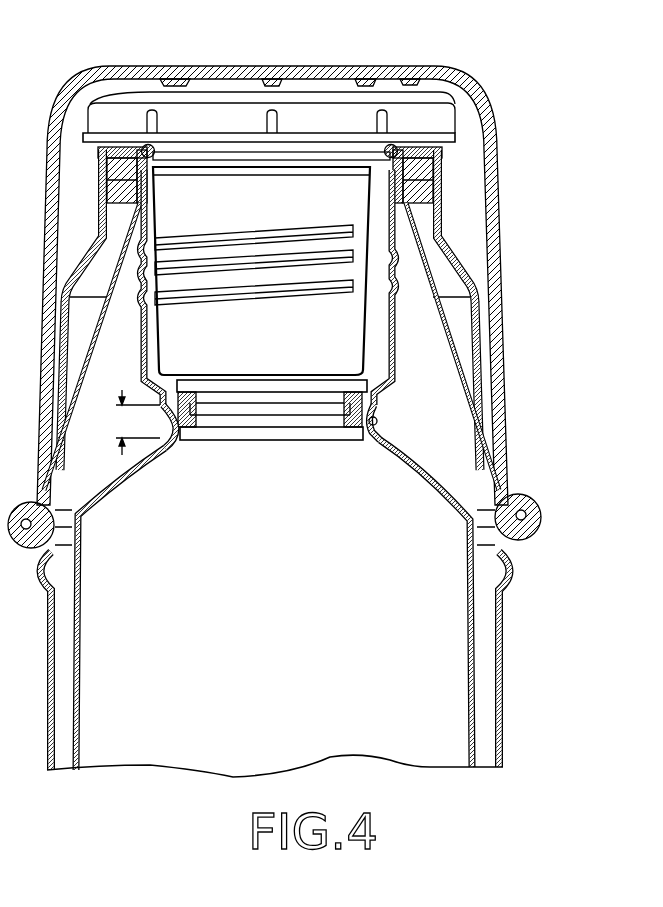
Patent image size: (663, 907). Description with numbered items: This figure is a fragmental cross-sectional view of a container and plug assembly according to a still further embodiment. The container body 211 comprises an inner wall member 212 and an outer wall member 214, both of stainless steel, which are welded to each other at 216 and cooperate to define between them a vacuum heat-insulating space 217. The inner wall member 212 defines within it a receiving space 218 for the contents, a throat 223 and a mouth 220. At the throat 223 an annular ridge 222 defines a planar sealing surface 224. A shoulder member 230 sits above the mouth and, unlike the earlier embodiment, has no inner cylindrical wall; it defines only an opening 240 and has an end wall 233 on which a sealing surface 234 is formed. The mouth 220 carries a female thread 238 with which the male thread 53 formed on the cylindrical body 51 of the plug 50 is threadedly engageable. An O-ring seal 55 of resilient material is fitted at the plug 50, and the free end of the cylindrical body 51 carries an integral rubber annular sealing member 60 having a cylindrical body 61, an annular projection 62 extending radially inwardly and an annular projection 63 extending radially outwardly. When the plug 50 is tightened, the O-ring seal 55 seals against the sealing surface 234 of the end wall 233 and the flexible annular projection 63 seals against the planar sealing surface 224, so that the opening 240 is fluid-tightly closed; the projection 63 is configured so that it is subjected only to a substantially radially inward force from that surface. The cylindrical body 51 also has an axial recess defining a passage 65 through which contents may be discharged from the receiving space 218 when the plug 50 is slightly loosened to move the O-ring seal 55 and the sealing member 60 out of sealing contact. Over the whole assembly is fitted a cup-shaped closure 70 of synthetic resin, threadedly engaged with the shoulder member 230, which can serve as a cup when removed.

The cup-shaped closure 70 is at (73, 92).
The plug 50 is at (413, 94).
The cylindrical body 51 is at (330, 104).
The O-ring seal 55 is at (148, 144).
The sealing surface 234 is at (407, 147).
The end wall 233 is at (433, 153).
The shoulder member 230 is at (443, 184).
The weld 216 is at (147, 183).
The female thread 238 is at (396, 262).
The opening 240 is at (397, 177).
The mouth 220 is at (148, 338).
The male thread 53 is at (258, 237).
The passage 65 is at (360, 330).
The annular projection 62 is at (205, 405).
The cylindrical body 61 is at (188, 441).
The annular sealing member 60 is at (172, 386).
The annular projection 63 is at (173, 446).
The vacuum heat-insulating space 217 is at (80, 690).
The annular ridge 222 is at (383, 442).
The throat 223 is at (371, 442).
The planar sealing surface 224 is at (378, 426).
The inner wall member 212 is at (470, 716).
The outer wall member 214 is at (504, 686).
The container body 211 is at (488, 768).
The receiving space 218 is at (292, 645).